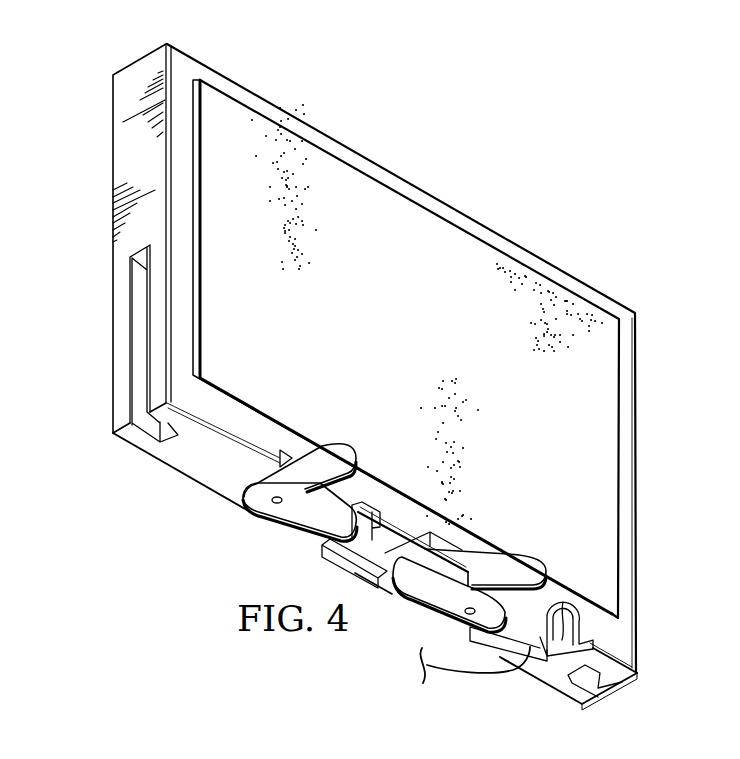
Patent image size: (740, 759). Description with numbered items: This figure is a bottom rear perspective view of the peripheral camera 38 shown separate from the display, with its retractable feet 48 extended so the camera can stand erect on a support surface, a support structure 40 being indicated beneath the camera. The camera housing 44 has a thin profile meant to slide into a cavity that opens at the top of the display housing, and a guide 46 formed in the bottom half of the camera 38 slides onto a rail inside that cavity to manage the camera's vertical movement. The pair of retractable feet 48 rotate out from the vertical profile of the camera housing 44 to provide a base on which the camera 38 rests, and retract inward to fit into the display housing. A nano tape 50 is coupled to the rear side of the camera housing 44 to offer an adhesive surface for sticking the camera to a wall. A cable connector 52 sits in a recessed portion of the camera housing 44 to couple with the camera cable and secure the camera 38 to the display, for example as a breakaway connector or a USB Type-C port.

The camera 38 is at (531, 192).
The mounting rail 40 is at (487, 677).
The camera housing 44 is at (110, 149).
The guide 46 is at (147, 330).
The retractable feet 48 is at (338, 446).
The nano tape 50 is at (400, 208).
The cable connector 52 is at (559, 637).